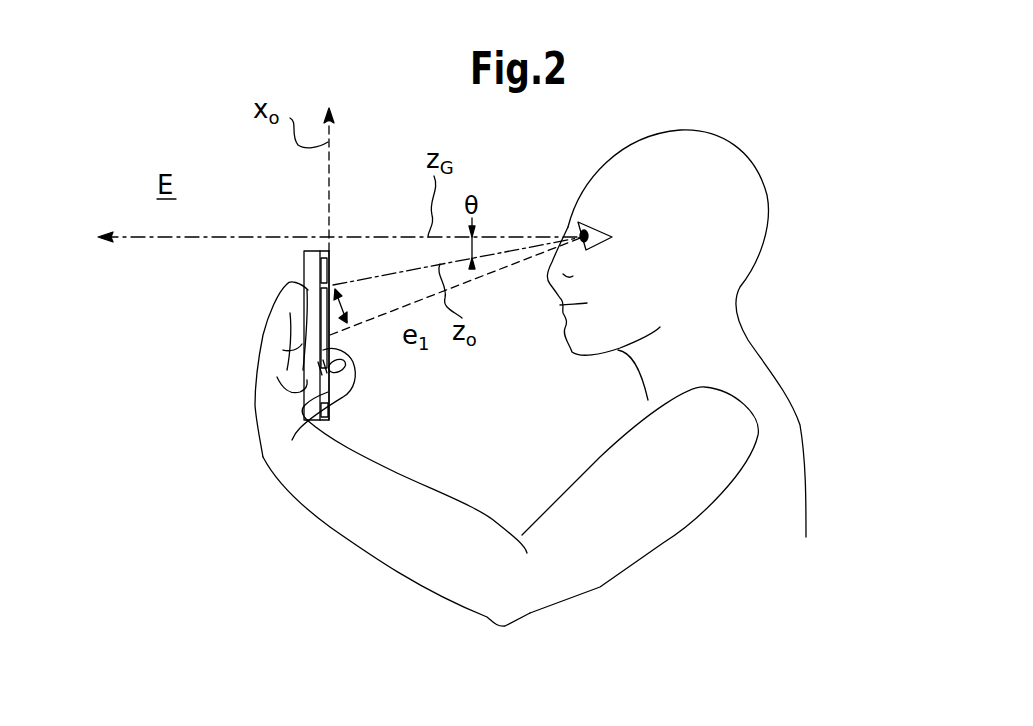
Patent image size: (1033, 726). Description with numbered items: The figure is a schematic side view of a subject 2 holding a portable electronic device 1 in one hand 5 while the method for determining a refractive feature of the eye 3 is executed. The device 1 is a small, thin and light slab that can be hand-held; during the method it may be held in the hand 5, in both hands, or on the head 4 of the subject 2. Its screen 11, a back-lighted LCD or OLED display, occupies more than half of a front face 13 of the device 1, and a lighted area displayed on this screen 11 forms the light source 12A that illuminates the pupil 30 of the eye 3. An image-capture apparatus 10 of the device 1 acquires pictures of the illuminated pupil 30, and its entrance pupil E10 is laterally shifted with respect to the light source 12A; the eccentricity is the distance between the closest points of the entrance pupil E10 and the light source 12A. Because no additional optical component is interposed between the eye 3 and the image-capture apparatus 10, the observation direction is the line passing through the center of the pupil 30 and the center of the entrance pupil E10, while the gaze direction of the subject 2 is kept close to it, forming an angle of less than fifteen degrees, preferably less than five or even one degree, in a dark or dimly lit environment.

The portable electronic device 1 is at (294, 272).
The subject 2 is at (786, 284).
The eye 3 is at (568, 229).
The head 4 is at (737, 148).
The hand 5 is at (257, 363).
The image-capture apparatus 10 is at (319, 264).
The screen 11 is at (352, 388).
The light source 12A is at (335, 340).
The front face 13 is at (332, 415).
The pupil 30 is at (583, 224).
The entrance pupil E10 is at (330, 268).